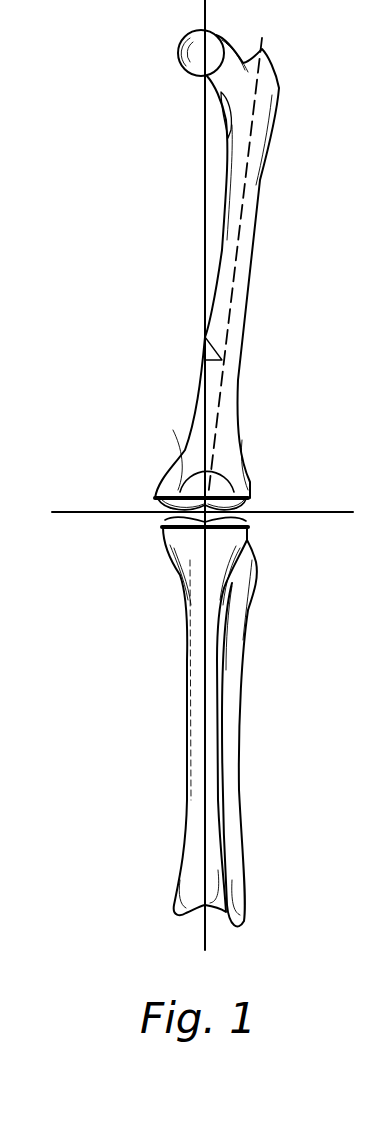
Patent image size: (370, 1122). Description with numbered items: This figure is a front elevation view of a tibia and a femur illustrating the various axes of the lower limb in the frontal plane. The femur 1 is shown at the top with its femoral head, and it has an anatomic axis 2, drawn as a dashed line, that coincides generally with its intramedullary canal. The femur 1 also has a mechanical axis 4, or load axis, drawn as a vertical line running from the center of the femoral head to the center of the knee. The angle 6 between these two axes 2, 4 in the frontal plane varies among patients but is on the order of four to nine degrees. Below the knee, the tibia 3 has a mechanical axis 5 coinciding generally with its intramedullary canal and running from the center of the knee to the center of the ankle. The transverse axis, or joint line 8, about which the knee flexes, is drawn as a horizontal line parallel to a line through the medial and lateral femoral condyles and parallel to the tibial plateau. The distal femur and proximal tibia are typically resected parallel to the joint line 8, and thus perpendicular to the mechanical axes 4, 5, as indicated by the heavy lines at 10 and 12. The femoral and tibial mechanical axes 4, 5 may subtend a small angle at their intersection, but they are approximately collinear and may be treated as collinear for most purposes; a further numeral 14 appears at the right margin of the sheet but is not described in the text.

The femur 1 is at (263, 153).
The anatomic axis 2 is at (255, 88).
The tibia 3 is at (187, 666).
The mechanical axis 4 is at (205, 135).
The mechanical axis 5 is at (204, 752).
The angle 6 is at (204, 337).
The joint line 8 is at (70, 513).
The distal femoral resection 10 is at (178, 494).
The proximal tibial resection 12 is at (168, 560).
The reference line 14 is at (366, 538).